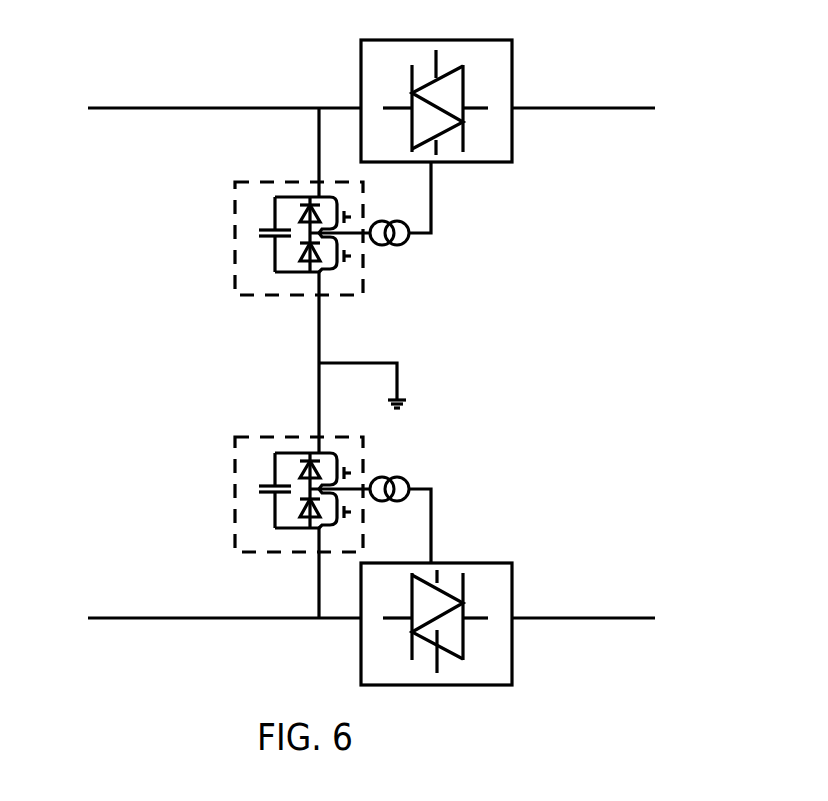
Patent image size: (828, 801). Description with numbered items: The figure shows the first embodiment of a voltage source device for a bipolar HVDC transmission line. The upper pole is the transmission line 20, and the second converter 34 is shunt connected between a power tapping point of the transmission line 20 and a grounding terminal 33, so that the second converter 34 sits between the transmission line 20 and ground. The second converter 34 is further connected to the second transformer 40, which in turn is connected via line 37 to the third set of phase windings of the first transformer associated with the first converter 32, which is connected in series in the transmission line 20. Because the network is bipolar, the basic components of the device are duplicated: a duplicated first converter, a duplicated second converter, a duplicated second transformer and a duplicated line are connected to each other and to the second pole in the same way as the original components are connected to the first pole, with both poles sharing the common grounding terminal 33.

The transmission line 20 is at (205, 108).
The first converter 32 is at (513, 135).
The grounding terminal 33 is at (408, 400).
The second converter 34 is at (233, 232).
The line 37 is at (433, 197).
The second transformer 40 is at (407, 247).